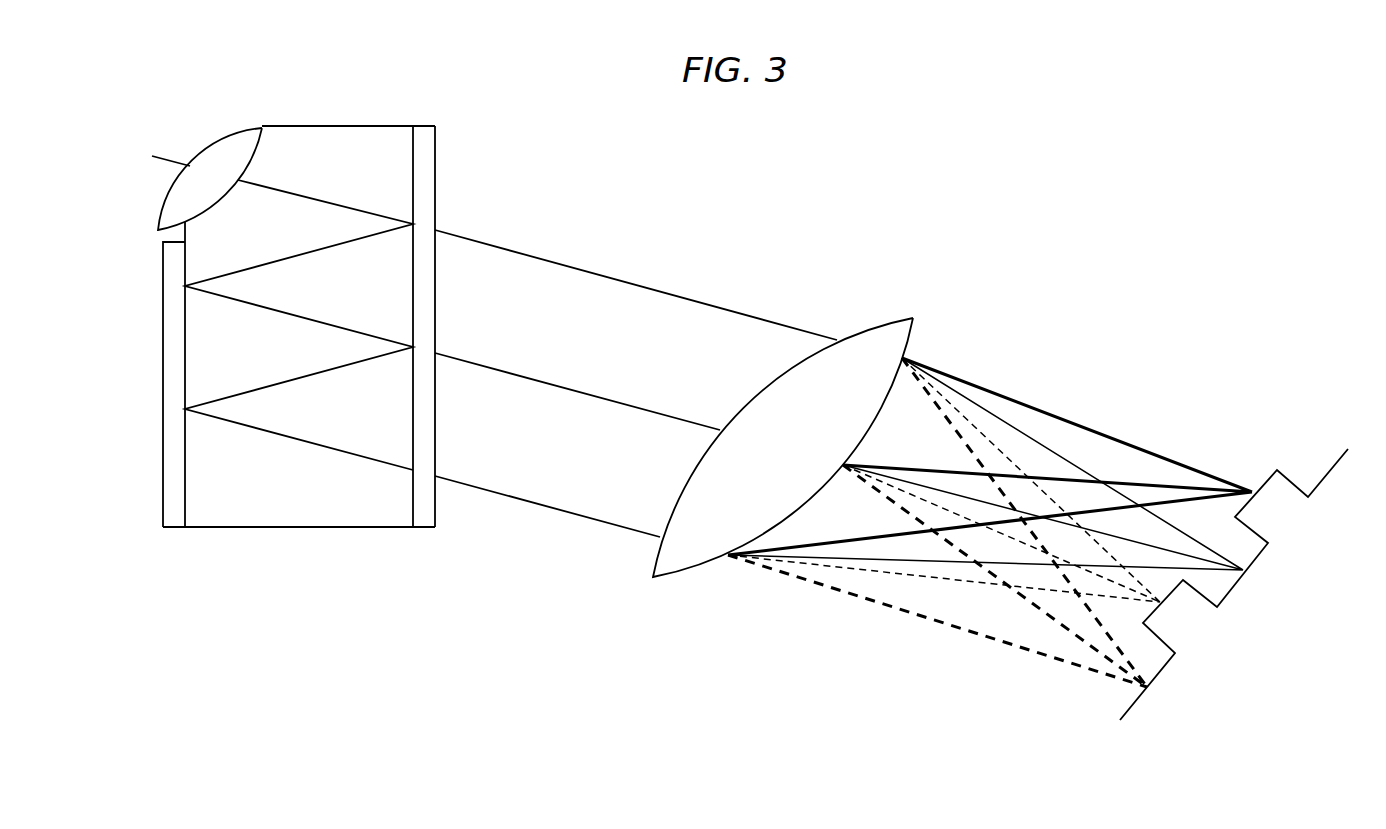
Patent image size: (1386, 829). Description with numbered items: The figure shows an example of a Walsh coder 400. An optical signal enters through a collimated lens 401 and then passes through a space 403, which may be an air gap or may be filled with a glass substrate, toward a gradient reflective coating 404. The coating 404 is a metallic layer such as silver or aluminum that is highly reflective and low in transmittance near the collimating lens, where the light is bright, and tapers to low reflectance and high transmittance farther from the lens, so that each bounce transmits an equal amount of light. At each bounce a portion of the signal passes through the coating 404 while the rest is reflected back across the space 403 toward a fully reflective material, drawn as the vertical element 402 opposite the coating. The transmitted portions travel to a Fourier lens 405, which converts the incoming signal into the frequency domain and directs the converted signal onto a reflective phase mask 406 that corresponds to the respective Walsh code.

The Walsh coder 400 is at (1088, 185).
The collimated lens 401 is at (237, 128).
The mirror 402 is at (172, 360).
The space 403 is at (300, 513).
The gradient reflective coating 404 is at (435, 175).
The Fourier lens 405 is at (885, 322).
The reflective phase mask 406 is at (1335, 462).